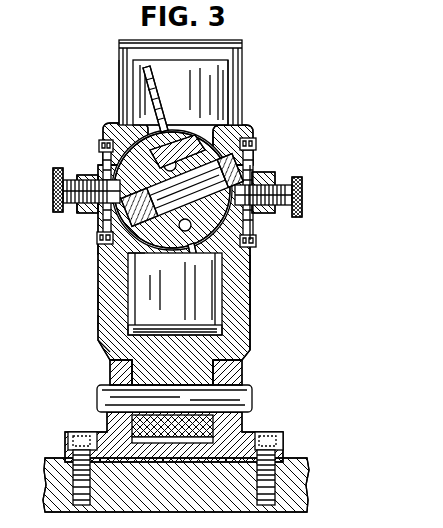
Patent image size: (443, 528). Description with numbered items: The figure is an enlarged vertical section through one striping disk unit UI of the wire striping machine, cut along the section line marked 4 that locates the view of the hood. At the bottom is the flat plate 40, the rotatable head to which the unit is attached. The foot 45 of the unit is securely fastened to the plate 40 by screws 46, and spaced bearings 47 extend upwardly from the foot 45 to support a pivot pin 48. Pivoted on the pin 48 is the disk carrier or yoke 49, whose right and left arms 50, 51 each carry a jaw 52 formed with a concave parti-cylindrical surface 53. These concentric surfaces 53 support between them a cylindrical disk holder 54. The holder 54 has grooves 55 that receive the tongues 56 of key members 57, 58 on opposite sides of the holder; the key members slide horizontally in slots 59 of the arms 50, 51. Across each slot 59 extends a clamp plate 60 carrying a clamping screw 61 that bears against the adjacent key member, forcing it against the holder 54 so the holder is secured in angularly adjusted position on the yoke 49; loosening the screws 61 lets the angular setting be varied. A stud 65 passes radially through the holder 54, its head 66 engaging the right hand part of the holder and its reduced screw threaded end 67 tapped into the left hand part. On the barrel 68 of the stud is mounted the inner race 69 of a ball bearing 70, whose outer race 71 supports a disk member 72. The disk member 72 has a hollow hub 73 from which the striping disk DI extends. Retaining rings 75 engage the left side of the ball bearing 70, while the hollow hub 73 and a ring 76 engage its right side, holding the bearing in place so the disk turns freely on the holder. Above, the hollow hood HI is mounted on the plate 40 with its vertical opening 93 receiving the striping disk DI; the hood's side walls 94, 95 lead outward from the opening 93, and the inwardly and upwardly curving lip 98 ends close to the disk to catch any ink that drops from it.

The plate 40 is at (295, 493).
The foot 45 is at (240, 438).
The screws 46 is at (82, 435).
The spaced bearings 47 is at (115, 372).
The pivot pin 48 is at (238, 397).
The disk carrier or yoke 49 is at (110, 343).
The right arm 50 is at (237, 302).
The left arm 51 is at (110, 295).
The jaw 52 is at (110, 124).
The concave parti-cylindrical surface 53 is at (193, 142).
The disk holder 54 is at (113, 267).
The grooves 55 is at (250, 247).
The tongues 56 is at (99, 234).
The key member 57 is at (253, 164).
The key member 58 is at (108, 165).
The slots 59 is at (80, 212).
The clamp plate 60 is at (88, 170).
The clamping screw 61 is at (57, 209).
The stud 65 is at (255, 235).
The head 66 is at (230, 147).
The reduced screw threaded end 67 is at (110, 248).
The barrel 68 is at (135, 250).
The inner race 69 is at (182, 190).
The ball bearing 70 is at (173, 137).
The outer race 71 is at (187, 249).
The disk member 72 is at (160, 122).
The hollow hub 73 is at (172, 291).
The retaining rings 75 is at (165, 216).
The ring 76 is at (243, 263).
The opening 93 is at (200, 72).
The side wall 94 is at (238, 88).
The side wall 95 is at (128, 77).
The lip 98 is at (222, 333).
The hollow hood HI is at (232, 72).
The striping disk DI is at (210, 312).
The disk unit UI is at (115, 322).
The section line 4- 4 is at (38, 213).